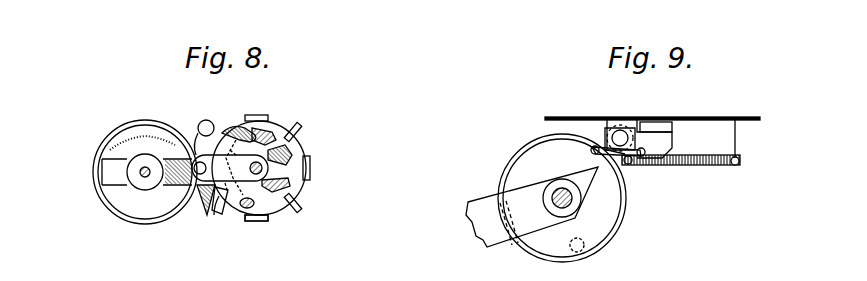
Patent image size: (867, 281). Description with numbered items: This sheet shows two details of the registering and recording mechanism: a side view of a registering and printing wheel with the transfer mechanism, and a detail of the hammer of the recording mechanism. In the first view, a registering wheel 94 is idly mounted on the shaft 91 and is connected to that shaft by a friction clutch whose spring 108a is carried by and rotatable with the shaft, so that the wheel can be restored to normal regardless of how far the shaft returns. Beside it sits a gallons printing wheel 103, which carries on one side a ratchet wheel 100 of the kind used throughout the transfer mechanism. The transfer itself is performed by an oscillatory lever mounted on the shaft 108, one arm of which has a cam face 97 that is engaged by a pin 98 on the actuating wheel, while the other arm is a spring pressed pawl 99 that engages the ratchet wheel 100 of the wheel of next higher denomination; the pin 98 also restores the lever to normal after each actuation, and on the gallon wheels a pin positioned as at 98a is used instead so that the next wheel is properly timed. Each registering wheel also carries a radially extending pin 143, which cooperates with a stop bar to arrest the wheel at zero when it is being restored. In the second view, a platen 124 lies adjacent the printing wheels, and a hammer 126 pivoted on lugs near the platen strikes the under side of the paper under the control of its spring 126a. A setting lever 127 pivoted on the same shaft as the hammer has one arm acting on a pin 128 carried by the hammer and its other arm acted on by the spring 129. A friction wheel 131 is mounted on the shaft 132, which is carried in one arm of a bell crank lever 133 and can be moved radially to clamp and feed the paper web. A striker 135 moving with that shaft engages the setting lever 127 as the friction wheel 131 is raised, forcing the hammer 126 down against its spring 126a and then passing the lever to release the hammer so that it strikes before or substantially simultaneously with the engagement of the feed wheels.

In FIG. 8, the registering wheel 94 is at (142, 122).
In FIG. 8, the shaft 91 is at (138, 180).
In FIG. 8, the shaft 108 is at (200, 124).
In FIG. 8, the spring 108a is at (118, 170).
In FIG. 8, the spring pressed pawl 99 is at (248, 134).
In FIG. 8, the ratchet wheel 100 is at (282, 152).
In FIG. 8, the gallons printing wheel 103 is at (306, 166).
In FIG. 8, the radially extending pin 143 is at (190, 203).
In FIG. 8, the cam face 97 is at (216, 203).
In FIG. 8, the pin 98 is at (248, 208).
In FIG. 8, the pin 98a is at (262, 222).
In FIG. 9, the friction wheel 131 is at (522, 152).
In FIG. 9, the spring 129 is at (583, 198).
In FIG. 9, the bell crank lever 133 is at (499, 232).
In FIG. 9, the shaft 132 is at (575, 217).
In FIG. 9, the striker 135 is at (598, 170).
In FIG. 9, the platen 124 is at (725, 117).
In FIG. 9, the hammer 126 is at (661, 127).
In FIG. 9, the spring 126a is at (700, 166).
In FIG. 9, the setting lever 127 is at (596, 147).
In FIG. 9, the pin 128 is at (630, 166).